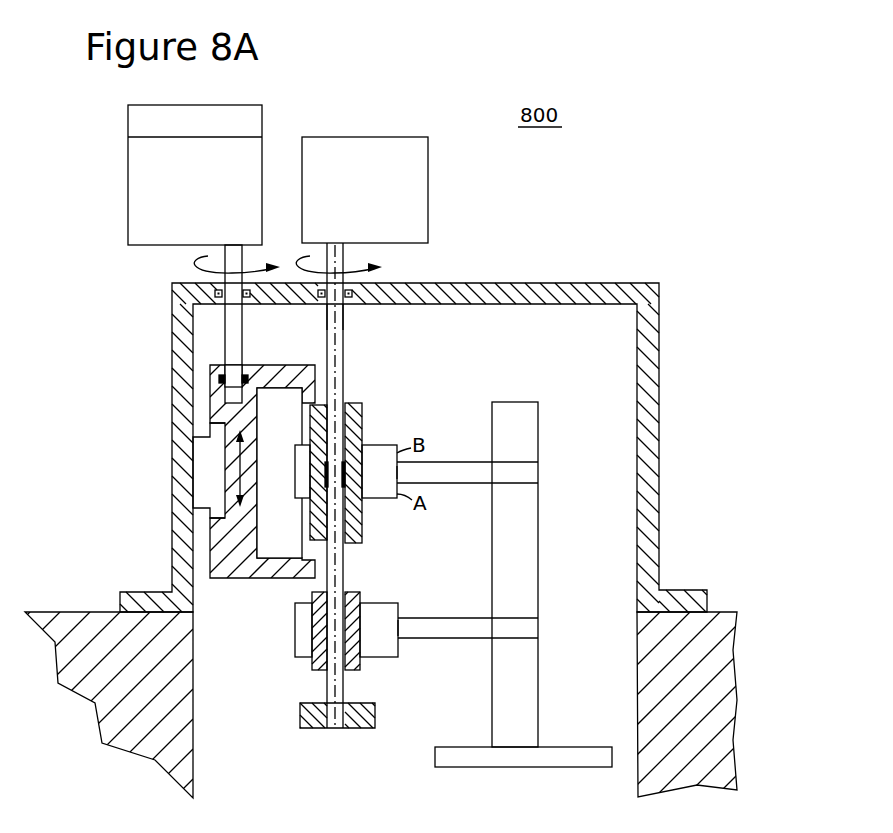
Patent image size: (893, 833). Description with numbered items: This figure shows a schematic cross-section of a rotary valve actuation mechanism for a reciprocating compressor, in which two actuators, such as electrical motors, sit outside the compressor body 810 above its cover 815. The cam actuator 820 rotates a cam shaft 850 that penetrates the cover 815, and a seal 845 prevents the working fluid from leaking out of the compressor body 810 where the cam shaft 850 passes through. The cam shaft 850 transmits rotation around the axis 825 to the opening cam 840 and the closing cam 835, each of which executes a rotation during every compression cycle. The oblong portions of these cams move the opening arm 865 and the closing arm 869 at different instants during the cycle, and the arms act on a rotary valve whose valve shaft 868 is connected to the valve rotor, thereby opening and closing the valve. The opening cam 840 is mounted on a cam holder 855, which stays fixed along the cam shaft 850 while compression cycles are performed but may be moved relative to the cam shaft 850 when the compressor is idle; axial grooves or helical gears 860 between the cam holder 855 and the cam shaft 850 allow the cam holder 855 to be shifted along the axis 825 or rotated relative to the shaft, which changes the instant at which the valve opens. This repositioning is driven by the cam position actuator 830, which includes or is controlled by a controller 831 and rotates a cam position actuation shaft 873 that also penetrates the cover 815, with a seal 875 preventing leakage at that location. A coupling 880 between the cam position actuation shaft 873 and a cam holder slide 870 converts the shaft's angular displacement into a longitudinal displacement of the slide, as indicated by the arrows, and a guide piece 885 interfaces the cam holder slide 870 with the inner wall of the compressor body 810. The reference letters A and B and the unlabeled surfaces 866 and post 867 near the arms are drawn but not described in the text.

The compressor body 810 is at (677, 675).
The cover 815 is at (650, 514).
The cam actuator 820 is at (430, 213).
The rotation axis 825 is at (335, 325).
The cam position actuator 830 is at (128, 185).
The controller 831 is at (128, 115).
The closing cam 835 is at (382, 610).
The opening cam 840 is at (380, 457).
The seal 845 is at (297, 283).
The cam shaft 850 is at (323, 690).
The cam holder 855 is at (353, 412).
The axial grooves or helical gears 860 is at (323, 478).
The opening arm 865 is at (452, 472).
The follower contact surface 866 is at (398, 472).
The guide post 867 is at (515, 417).
The valve shaft 868 is at (568, 755).
The closing arm 869 is at (423, 625).
The cam holder slide 870 is at (223, 410).
The cam position actuation shaft 873 is at (233, 337).
The seal 875 is at (218, 293).
The coupling 880 is at (234, 377).
The guide piece 885 is at (207, 475).